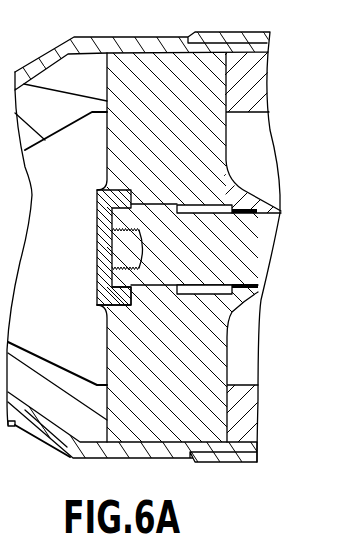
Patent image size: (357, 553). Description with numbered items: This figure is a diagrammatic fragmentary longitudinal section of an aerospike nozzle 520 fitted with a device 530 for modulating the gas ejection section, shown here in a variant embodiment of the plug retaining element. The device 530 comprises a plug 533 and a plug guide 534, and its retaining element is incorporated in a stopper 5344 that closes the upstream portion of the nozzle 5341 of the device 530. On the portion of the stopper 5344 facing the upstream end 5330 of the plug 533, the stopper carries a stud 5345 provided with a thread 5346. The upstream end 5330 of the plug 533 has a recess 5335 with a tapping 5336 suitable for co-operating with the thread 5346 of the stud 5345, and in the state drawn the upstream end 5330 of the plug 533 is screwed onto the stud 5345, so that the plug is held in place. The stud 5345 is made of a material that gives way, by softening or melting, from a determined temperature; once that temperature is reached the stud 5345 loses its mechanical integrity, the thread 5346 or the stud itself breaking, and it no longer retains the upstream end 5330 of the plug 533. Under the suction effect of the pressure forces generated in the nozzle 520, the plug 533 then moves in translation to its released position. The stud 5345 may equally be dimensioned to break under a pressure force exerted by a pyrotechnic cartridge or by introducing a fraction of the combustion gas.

The nozzle 520 is at (113, 35).
The device for modulating the gas ejection section 530 is at (250, 184).
The plug 533 is at (252, 244).
The plug guide 534 is at (247, 294).
The upstream end of the plug 5330 is at (217, 256).
The nozzle of the device 5341 is at (197, 210).
The recess 5335 is at (97, 268).
The tapping 5336 is at (97, 287).
The stopper 5344 is at (120, 233).
The stud 5345 is at (97, 233).
The thread 5346 is at (130, 226).